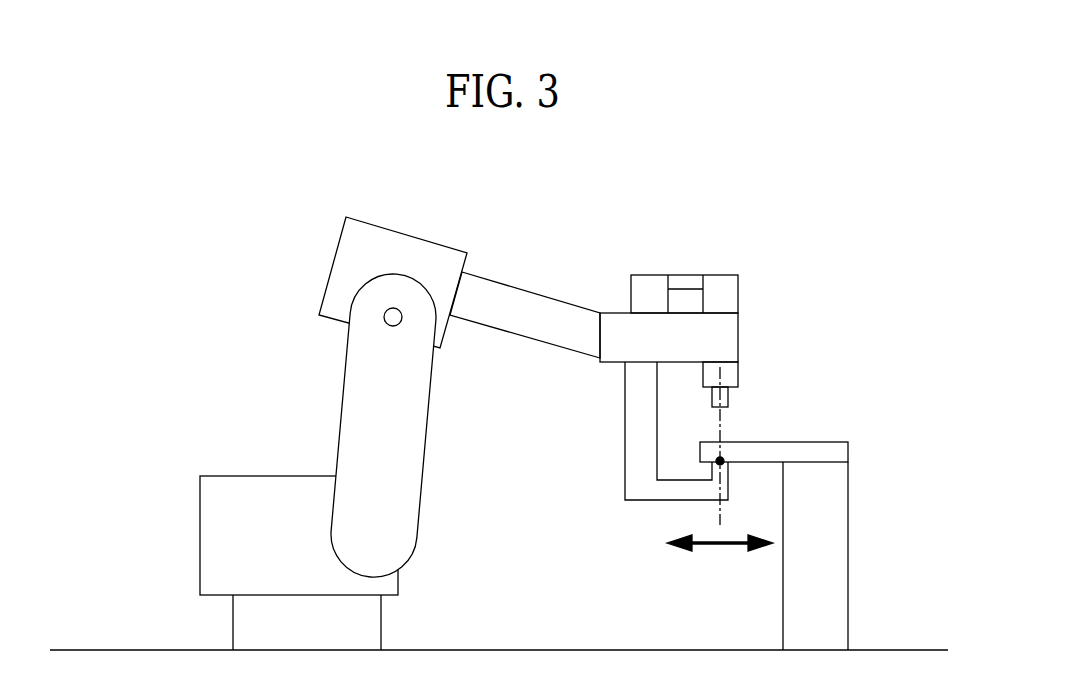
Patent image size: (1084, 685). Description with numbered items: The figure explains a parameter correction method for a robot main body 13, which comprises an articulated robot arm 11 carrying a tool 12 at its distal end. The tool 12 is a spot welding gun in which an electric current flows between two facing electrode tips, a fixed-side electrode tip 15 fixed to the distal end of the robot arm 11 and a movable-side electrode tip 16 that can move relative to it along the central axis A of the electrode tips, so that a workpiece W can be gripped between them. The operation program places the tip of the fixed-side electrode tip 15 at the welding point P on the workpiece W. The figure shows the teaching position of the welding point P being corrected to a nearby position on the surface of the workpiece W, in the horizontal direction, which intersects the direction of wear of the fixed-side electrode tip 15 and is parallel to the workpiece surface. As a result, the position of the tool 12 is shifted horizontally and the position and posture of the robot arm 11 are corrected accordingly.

The robot arm 11 is at (533, 291).
The tool 12 is at (752, 293).
The robot main body 13 is at (709, 306).
The fixed-side electrode tip 15 is at (712, 470).
The movable-side electrode tip 16 is at (728, 397).
The central axis A is at (718, 515).
The welding point P is at (722, 464).
The workpiece W is at (822, 441).